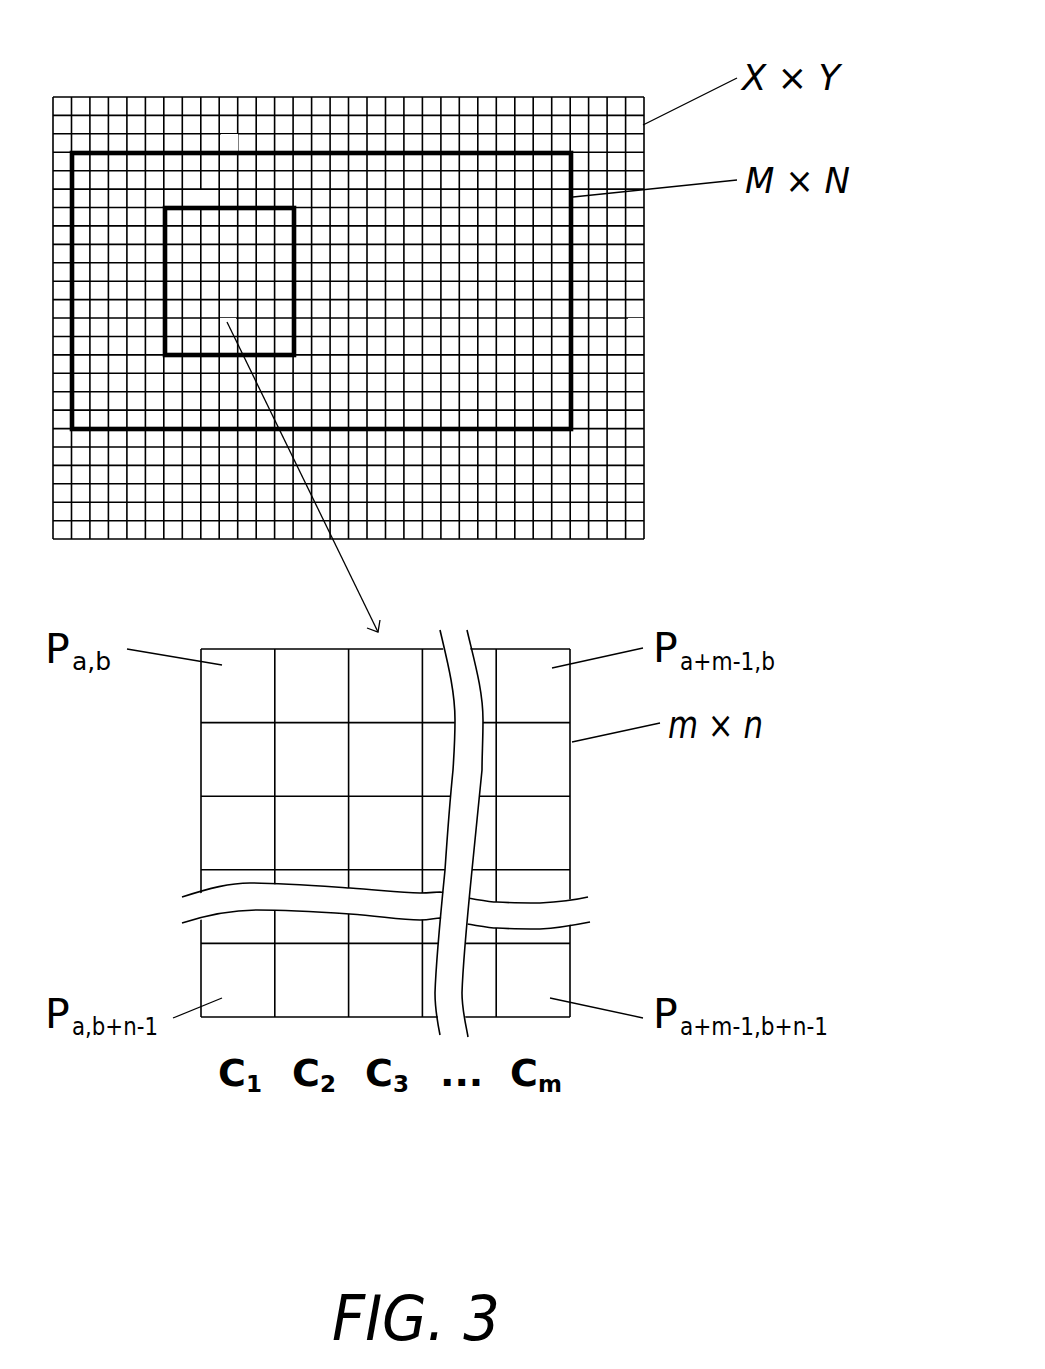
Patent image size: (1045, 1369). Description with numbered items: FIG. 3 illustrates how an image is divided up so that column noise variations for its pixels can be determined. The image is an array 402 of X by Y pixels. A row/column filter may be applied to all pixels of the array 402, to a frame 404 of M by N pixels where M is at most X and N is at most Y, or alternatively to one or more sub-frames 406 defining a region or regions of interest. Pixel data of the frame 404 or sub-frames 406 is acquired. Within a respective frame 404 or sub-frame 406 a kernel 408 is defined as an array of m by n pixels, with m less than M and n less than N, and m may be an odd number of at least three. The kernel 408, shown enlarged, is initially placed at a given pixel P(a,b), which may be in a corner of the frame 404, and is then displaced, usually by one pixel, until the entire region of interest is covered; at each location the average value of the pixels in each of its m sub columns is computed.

The array 402 is at (634, 328).
The frame 404 is at (573, 365).
The sub-frame 406 is at (205, 208).
The kernel 408 is at (552, 833).